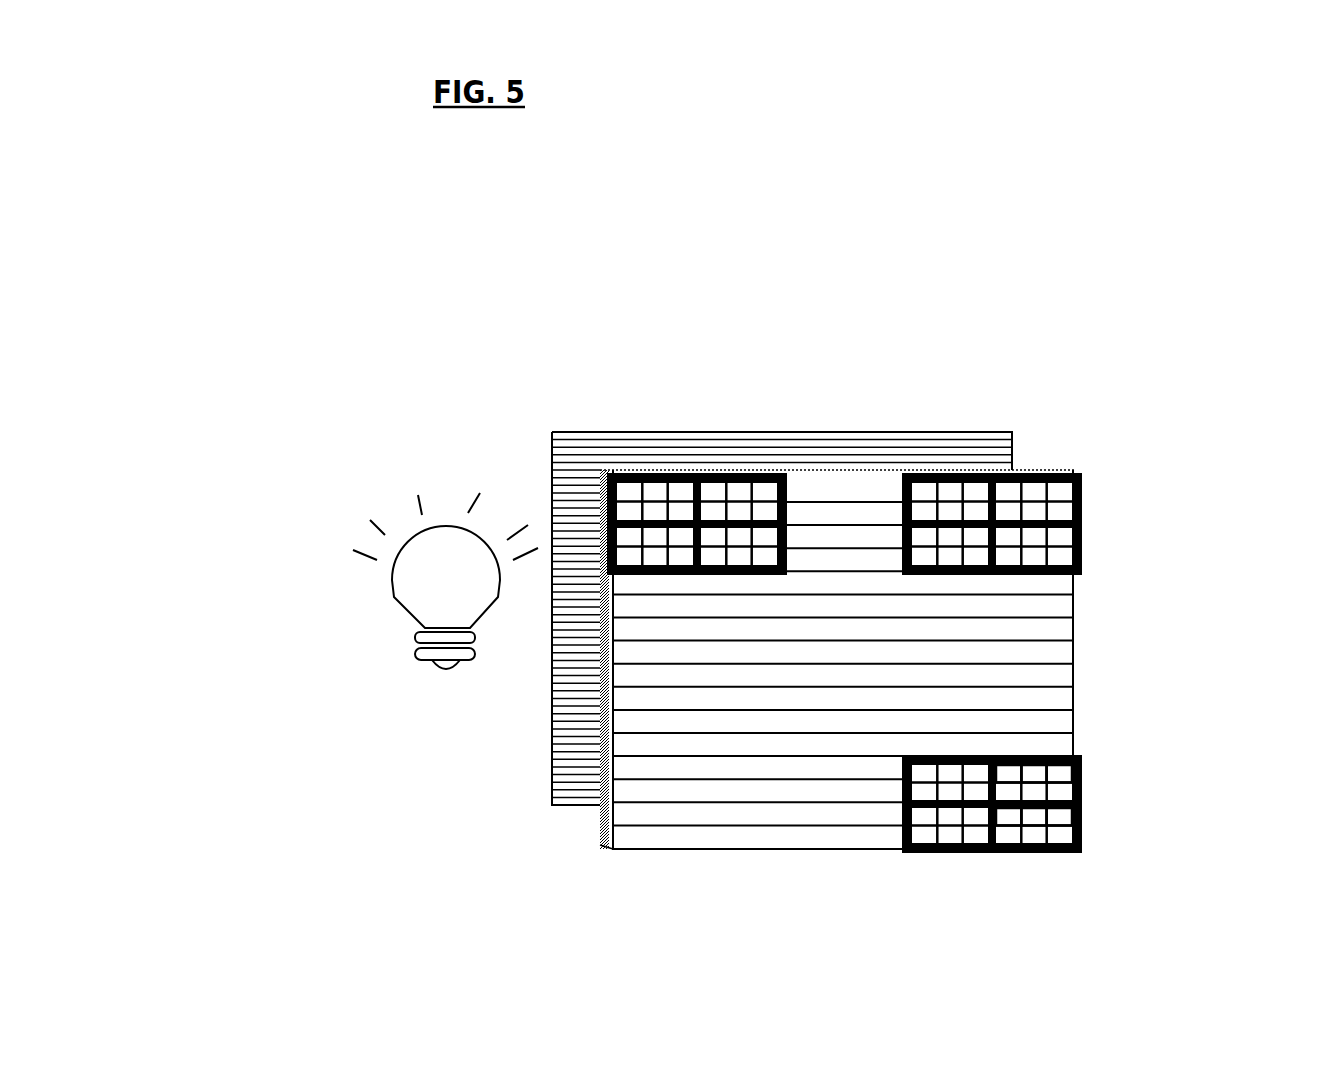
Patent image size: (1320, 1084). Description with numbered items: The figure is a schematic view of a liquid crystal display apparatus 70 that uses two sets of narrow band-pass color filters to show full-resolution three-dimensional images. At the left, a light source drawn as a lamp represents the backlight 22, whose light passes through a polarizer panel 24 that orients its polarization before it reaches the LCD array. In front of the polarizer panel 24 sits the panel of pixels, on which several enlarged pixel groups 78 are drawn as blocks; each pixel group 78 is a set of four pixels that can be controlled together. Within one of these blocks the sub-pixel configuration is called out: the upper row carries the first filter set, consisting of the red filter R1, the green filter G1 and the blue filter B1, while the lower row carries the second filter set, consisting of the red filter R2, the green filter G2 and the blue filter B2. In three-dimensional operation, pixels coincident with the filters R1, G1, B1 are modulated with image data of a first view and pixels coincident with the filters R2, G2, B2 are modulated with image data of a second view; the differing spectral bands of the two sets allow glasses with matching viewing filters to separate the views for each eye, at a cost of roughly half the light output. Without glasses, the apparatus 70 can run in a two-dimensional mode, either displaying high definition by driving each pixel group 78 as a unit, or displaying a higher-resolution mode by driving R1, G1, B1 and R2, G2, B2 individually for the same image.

The light source 22 is at (412, 605).
The polarizer panel 24 is at (712, 432).
The apparatus 70 is at (962, 160).
The pixel groups 78 is at (1082, 537).
The red narrow band-pass color filter of first set R1 is at (1008, 772).
The green narrow band-pass color filter of first set G1 is at (1033, 772).
The blue narrow band-pass color filter of first set B1 is at (1055, 772).
The blue narrow band-pass color filter of second set B2 is at (1053, 792).
The green narrow band-pass color filter of second set G2 is at (1030, 790).
The red narrow band-pass color filter of second set R2 is at (1008, 790).